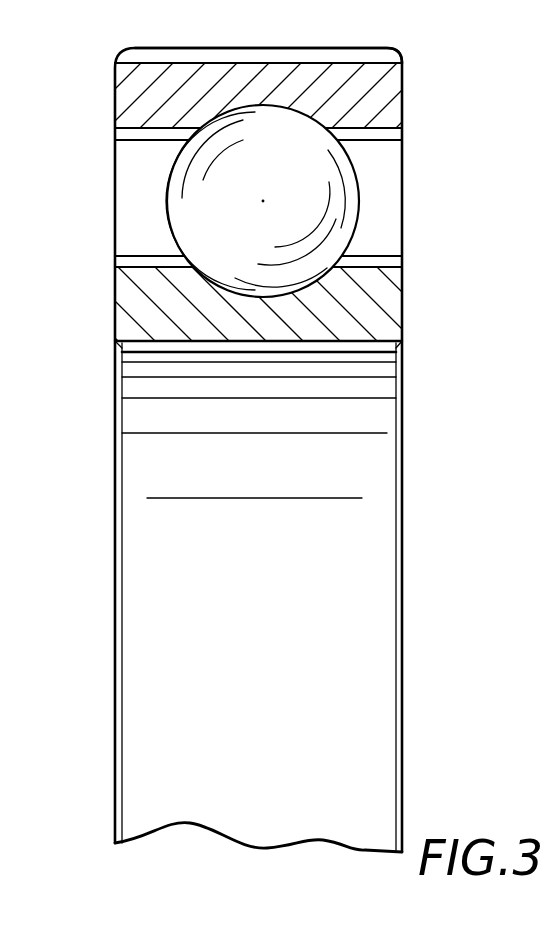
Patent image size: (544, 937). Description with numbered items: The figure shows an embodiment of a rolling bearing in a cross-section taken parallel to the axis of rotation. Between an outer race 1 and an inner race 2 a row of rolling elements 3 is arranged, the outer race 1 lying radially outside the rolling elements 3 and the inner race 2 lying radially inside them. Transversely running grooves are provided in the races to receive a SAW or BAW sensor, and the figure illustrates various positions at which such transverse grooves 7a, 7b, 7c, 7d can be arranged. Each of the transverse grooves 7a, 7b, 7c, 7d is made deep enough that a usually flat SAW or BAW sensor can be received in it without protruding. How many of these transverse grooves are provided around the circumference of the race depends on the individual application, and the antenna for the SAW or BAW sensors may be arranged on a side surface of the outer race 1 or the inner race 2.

The outer race 1 is at (308, 85).
The inner race 2 is at (395, 298).
The rolling elements 3 is at (337, 213).
The transverse groove 7a is at (383, 52).
The transverse groove 7b is at (395, 138).
The transverse groove 7c is at (395, 258).
The transverse groove 7d is at (403, 350).